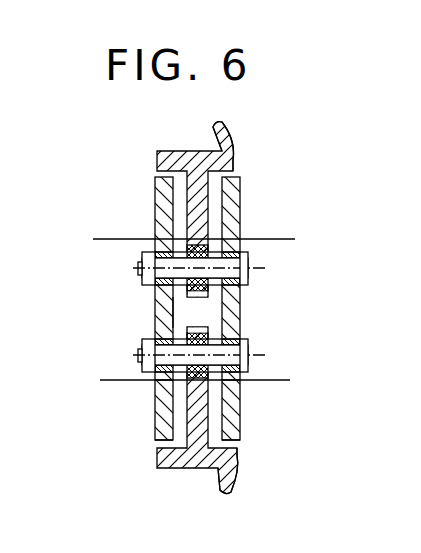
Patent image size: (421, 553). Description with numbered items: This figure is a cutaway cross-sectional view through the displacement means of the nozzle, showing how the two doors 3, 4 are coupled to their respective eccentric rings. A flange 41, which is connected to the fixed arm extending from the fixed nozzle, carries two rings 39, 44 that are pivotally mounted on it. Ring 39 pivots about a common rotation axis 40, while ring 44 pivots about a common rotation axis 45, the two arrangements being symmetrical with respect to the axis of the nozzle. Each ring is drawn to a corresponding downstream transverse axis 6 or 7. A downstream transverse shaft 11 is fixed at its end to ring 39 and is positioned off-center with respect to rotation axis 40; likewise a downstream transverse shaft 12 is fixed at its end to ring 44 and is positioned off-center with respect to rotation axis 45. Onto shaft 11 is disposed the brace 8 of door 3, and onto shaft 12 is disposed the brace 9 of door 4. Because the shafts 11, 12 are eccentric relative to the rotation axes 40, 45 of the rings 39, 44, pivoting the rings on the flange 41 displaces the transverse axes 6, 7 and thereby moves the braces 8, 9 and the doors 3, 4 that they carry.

The door 3 is at (228, 133).
The door 4 is at (237, 487).
The downstream transverse axis 6 is at (138, 267).
The downstream transverse axis 7 is at (140, 357).
The brace 8 is at (189, 184).
The brace 9 is at (195, 435).
The downstream transverse shaft 11 is at (247, 276).
The downstream transverse shaft 12 is at (250, 357).
The ring 39 is at (161, 206).
The rotation axis 40 is at (120, 239).
The flange 41 is at (157, 309).
The ring 44 is at (155, 405).
The rotation axis 45 is at (132, 383).